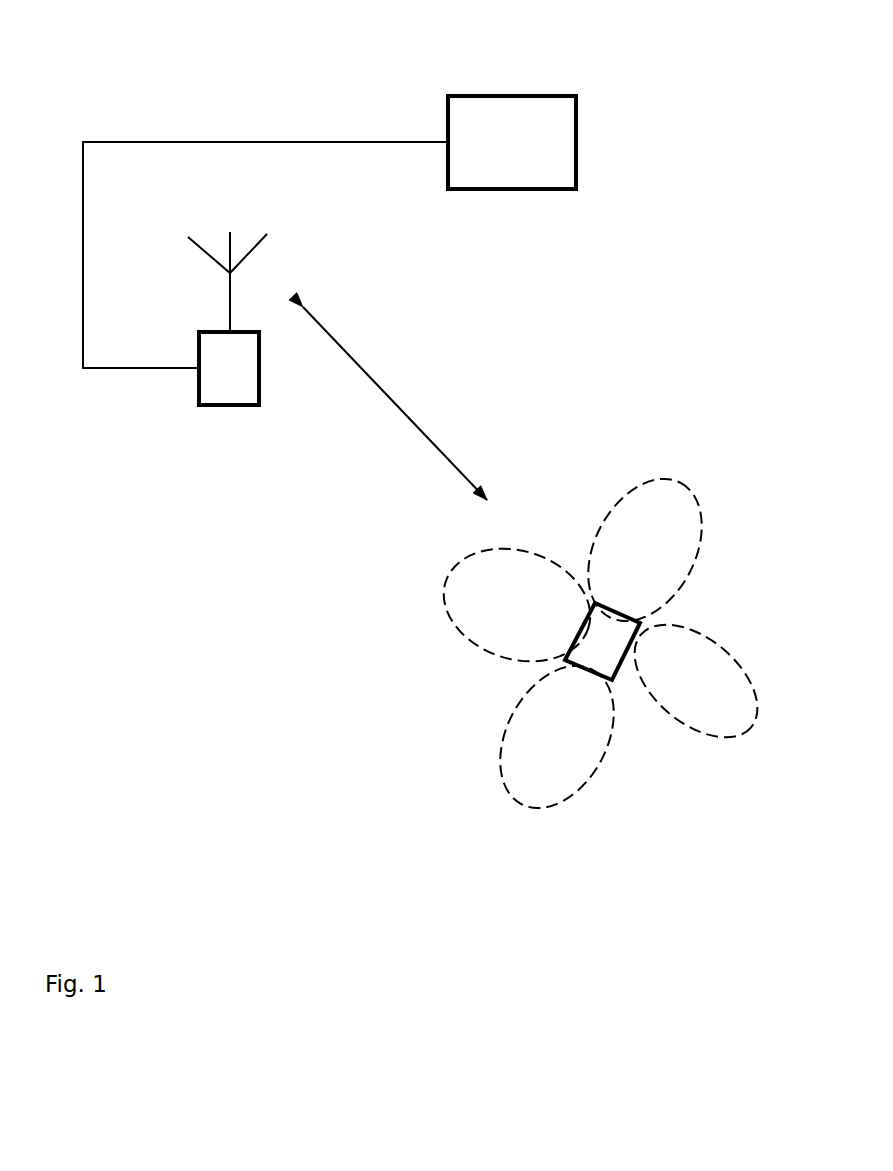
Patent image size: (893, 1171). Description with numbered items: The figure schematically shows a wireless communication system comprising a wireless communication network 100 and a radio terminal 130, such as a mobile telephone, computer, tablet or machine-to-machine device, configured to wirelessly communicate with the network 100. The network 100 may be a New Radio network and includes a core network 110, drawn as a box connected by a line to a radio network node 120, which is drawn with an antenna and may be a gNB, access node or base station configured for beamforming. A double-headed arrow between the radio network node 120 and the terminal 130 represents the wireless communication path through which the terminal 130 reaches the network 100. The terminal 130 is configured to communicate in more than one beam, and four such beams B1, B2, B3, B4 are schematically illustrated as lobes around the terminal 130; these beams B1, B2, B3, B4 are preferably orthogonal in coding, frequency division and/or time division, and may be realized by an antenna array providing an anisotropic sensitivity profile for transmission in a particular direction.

The wireless communication network 100 is at (210, 72).
The core network 110 is at (528, 152).
The radio network node 120 is at (187, 342).
The radio terminal 130 is at (593, 683).
The beam B1 is at (515, 548).
The beam B2 is at (685, 480).
The beam B3 is at (732, 657).
The beam B4 is at (548, 810).